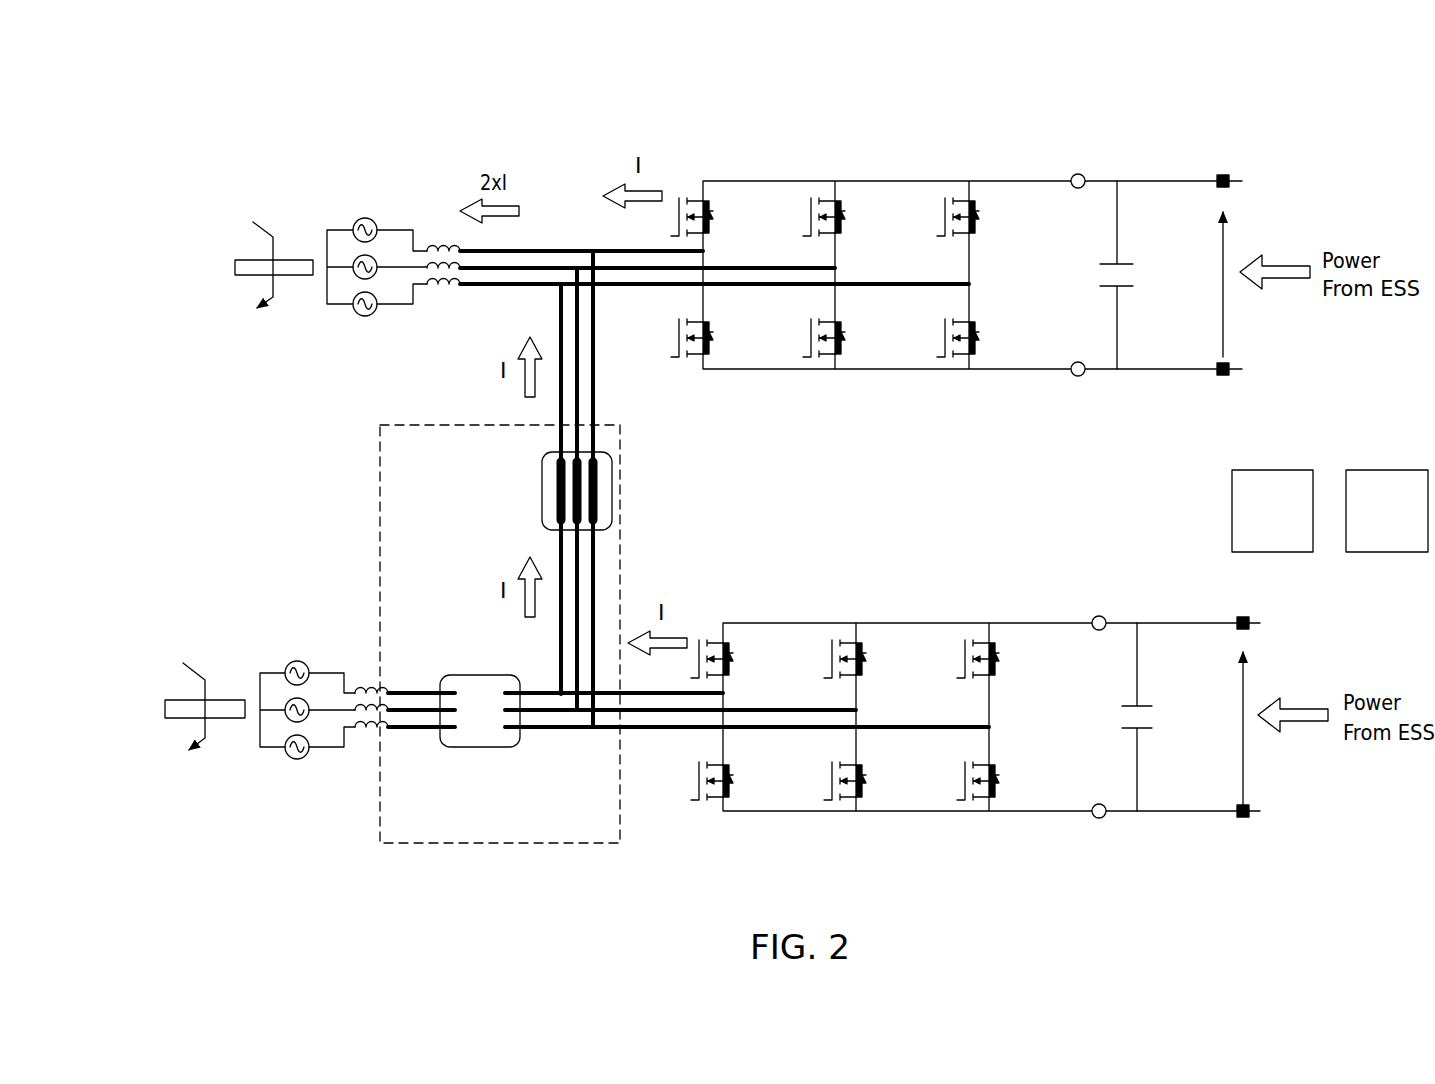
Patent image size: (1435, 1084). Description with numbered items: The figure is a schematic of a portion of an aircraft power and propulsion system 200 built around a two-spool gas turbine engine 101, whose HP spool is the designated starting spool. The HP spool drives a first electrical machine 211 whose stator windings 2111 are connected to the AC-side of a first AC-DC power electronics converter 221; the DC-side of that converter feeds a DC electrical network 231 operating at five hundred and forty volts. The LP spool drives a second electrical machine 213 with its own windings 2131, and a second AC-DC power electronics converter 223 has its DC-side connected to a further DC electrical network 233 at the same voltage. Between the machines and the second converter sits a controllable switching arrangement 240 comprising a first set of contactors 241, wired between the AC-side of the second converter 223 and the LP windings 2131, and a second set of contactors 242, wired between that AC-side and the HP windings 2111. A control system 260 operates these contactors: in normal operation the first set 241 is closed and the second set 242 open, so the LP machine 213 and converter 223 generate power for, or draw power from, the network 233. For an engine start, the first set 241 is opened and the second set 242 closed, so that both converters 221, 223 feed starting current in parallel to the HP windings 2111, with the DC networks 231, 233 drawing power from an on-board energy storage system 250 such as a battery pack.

The aircraft power and propulsion system 200 is at (176, 168).
The gas turbine engine 101 is at (193, 400).
The first electrical machine 211 is at (375, 181).
The stator windings 2111 is at (335, 308).
The first AC-DC power electronics converter 221 is at (1092, 118).
The DC electrical network 231 is at (1220, 178).
The second AC-DC power electronics converter 223 is at (899, 836).
The DC electrical network 233 is at (1242, 818).
The second electrical machine 213 is at (224, 792).
The windings 2131 is at (344, 750).
The controllable switching arrangement 240 is at (430, 847).
The first set of contactors 241 is at (452, 675).
The second set of contactors 242 is at (613, 462).
The on-board energy storage system 250 is at (1297, 523).
The control system 260 is at (1411, 523).